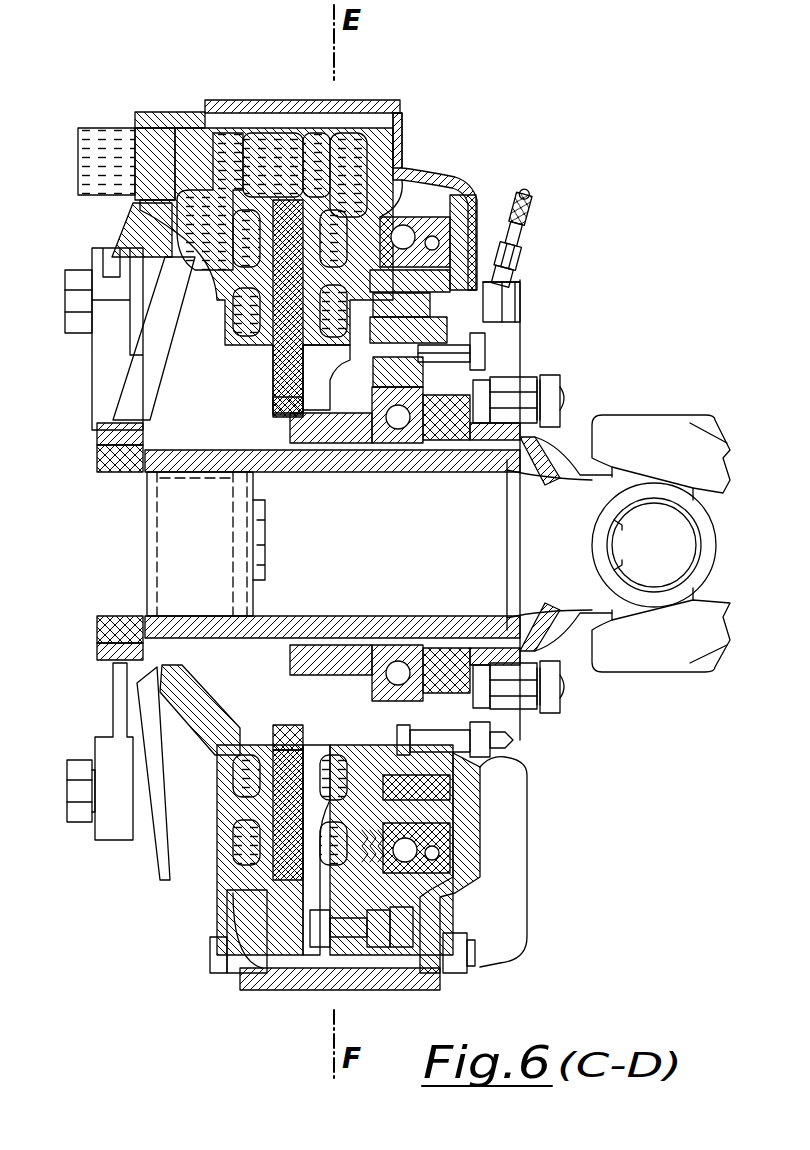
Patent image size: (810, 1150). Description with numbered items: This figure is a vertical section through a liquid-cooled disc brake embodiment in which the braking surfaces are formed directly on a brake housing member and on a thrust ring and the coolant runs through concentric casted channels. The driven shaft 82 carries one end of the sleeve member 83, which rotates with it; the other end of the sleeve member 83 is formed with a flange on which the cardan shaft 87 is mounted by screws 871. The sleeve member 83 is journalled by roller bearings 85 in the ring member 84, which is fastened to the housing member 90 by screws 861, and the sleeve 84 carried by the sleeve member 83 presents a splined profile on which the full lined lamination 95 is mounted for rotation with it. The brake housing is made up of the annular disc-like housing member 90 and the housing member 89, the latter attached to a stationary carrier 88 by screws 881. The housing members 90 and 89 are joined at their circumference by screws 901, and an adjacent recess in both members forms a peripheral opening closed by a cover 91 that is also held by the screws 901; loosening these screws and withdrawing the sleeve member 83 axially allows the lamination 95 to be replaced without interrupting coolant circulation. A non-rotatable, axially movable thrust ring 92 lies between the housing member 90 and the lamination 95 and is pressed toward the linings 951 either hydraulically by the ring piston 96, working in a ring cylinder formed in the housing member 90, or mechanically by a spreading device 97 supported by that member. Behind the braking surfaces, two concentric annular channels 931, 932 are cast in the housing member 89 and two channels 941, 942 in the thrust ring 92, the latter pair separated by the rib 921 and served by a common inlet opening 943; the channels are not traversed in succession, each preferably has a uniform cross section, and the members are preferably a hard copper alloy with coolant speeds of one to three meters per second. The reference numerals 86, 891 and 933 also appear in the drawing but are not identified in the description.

The driven shaft 82 is at (130, 540).
The sleeve member 83 is at (268, 463).
The ring member 84 is at (320, 440).
The roller bearings 85 is at (385, 420).
The ball bearing 86 is at (450, 368).
The screws 861 is at (478, 352).
The cardan shaft 87 is at (637, 442).
The screws 871 is at (548, 405).
The stationary carrier 88 is at (107, 738).
The screws 881 is at (80, 792).
The housing member 89 is at (190, 330).
The upper bracket bolt 891 is at (167, 233).
The housing member 90 is at (478, 212).
The screws 901 is at (470, 957).
The cover 91 is at (247, 983).
The thrust ring 92 is at (440, 186).
The rib 921 is at (468, 195).
The annular channel 931 is at (240, 783).
The annular channel 932 is at (255, 855).
The splined shaft pocket 933 is at (193, 190).
The annular channel 941 is at (370, 768).
The annular channel 942 is at (447, 877).
The fluid inlet opening 943 is at (350, 180).
The lamination 95 is at (287, 670).
The linings 951 is at (298, 880).
The ring piston 96 is at (417, 800).
The spreading device 97 is at (380, 880).